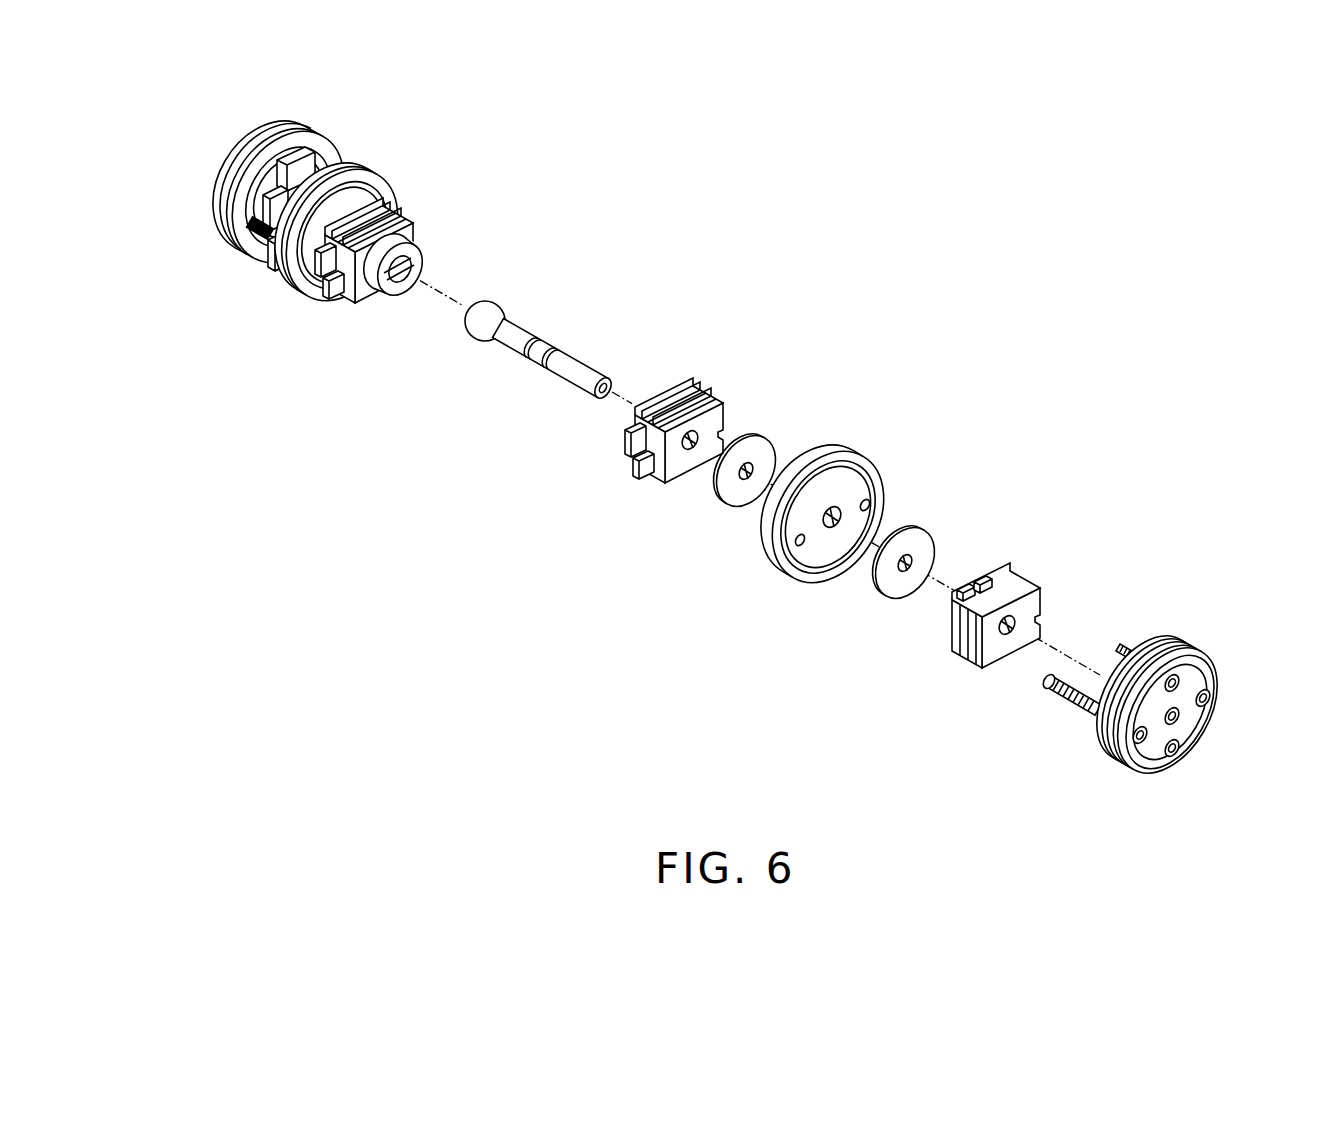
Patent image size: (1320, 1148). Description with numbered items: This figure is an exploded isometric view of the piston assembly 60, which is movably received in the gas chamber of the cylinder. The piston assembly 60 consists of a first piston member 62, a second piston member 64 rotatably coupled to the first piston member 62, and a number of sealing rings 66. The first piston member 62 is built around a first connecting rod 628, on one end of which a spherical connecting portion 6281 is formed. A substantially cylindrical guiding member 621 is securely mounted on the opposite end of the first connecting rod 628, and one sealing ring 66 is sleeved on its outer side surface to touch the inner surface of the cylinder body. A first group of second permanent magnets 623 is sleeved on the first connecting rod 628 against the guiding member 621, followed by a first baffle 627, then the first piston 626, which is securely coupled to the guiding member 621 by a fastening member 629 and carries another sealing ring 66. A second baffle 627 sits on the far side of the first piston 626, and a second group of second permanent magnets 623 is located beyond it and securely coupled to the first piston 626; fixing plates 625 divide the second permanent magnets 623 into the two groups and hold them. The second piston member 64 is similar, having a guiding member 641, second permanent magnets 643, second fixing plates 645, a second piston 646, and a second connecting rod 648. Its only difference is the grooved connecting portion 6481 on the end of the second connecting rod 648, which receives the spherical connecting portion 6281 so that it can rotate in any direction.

The piston assembly 60 is at (762, 178).
The first piston member 62 is at (750, 613).
The second piston member 64 is at (318, 123).
The sealing ring 66 is at (1160, 643).
The guiding member 621 is at (1185, 715).
The second permanent magnet 623 is at (675, 392).
The fixing plate 625 is at (707, 410).
The first piston 626 is at (840, 462).
The baffle 627 is at (763, 453).
The first connecting rod 628 is at (513, 333).
The spherical connecting portion 6281 is at (485, 313).
The fastening member 629 is at (1065, 703).
The guiding member 641 is at (237, 165).
The second permanent magnet 643 is at (368, 182).
The second fixing plate 645 is at (357, 283).
The second piston 646 is at (298, 298).
The second connecting rod 648 is at (403, 224).
The grooved connecting portion 6481 is at (410, 284).